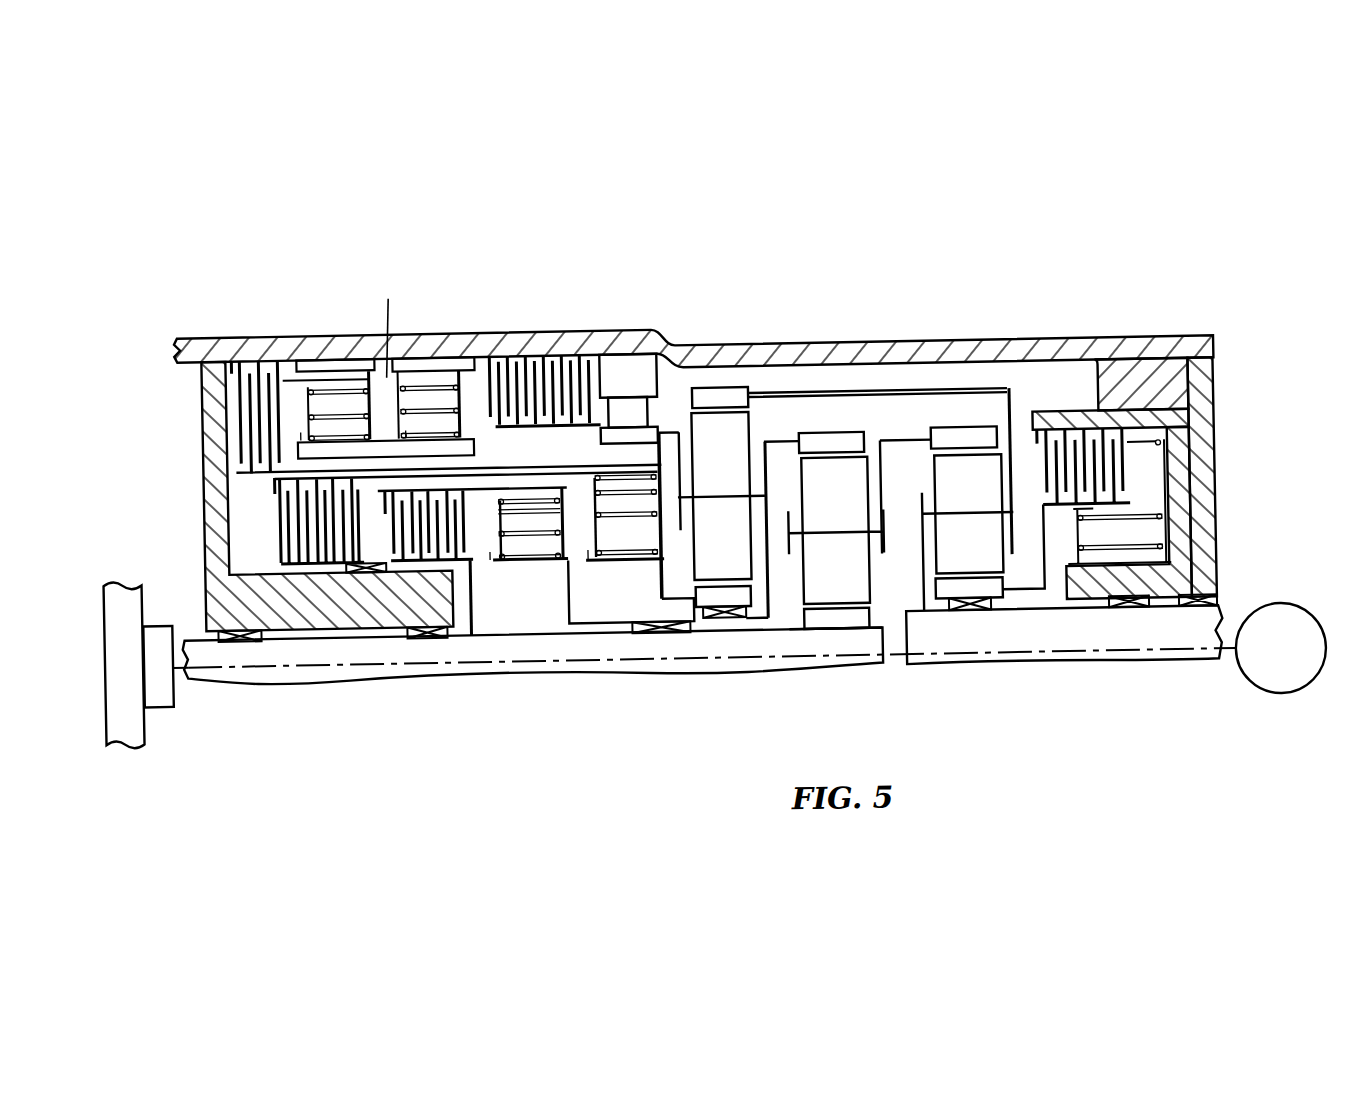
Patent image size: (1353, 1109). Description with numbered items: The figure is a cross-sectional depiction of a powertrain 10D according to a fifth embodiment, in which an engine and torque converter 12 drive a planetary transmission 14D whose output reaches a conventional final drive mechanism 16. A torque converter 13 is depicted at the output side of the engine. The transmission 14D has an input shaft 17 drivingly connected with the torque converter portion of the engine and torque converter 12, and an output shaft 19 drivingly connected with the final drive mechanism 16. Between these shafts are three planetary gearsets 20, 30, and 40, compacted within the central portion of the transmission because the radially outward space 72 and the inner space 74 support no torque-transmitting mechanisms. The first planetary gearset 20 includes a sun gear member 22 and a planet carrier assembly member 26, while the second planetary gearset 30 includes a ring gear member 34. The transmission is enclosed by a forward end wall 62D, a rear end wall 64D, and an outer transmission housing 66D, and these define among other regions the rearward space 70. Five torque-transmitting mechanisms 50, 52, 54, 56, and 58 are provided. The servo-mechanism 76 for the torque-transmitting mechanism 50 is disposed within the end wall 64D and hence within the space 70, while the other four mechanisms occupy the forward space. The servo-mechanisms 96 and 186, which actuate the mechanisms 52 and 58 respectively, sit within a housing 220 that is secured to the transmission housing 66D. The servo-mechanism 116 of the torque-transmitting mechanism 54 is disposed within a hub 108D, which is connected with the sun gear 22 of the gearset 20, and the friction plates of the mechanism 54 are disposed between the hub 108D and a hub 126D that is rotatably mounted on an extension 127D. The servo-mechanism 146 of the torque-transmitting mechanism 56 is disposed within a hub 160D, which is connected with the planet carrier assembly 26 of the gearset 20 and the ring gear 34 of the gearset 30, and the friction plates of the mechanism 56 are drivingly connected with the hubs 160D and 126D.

The powertrain 10D is at (210, 322).
The engine and torque converter 12 is at (132, 571).
The torque converter 13 is at (174, 615).
The planetary transmission 14D is at (720, 314).
The final drive mechanism 16 is at (1307, 616).
The input shaft 17 is at (212, 649).
The output shaft 19 is at (1105, 648).
The planetary gearset 20 is at (736, 624).
The sun gear member 22 is at (722, 598).
The planet carrier assembly member 26 is at (762, 498).
The planetary gearset 30 is at (849, 638).
The ring gear member 34 is at (842, 442).
The planetary gearset 40 is at (967, 618).
The torque-transmitting mechanism 50 is at (1144, 413).
The torque-transmitting mechanism 52 is at (326, 356).
The torque-transmitting mechanism 54 is at (280, 524).
The torque-transmitting mechanism 56 is at (481, 562).
The torque-transmitting mechanism 58 is at (523, 346).
The forward end wall 62D is at (207, 456).
The rear end wall 64D is at (1218, 490).
The transmission housing 66D is at (855, 356).
The rearward space 70 is at (1048, 412).
The radially outward space 72 is at (766, 392).
The inner space 74 is at (788, 589).
The fluid-operated servo-mechanism 76 is at (1194, 457).
The servo-mechanism 96 is at (364, 360).
The hub 108D is at (582, 462).
The servo-mechanism 116 is at (651, 564).
The hub 126D is at (485, 601).
The extension 127D is at (369, 599).
The servo-mechanism 146 is at (553, 562).
The hub 160D is at (570, 585).
The servo-mechanism 186 is at (424, 362).
The housing 220 is at (389, 329).